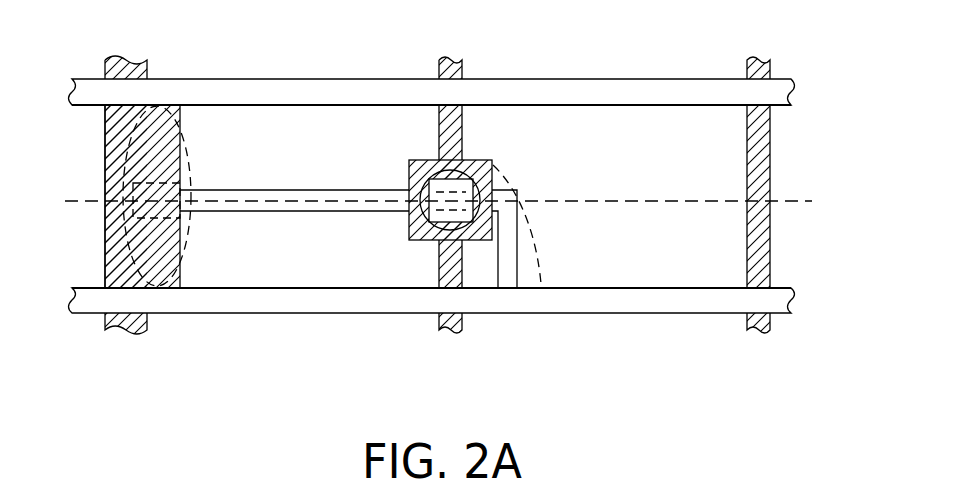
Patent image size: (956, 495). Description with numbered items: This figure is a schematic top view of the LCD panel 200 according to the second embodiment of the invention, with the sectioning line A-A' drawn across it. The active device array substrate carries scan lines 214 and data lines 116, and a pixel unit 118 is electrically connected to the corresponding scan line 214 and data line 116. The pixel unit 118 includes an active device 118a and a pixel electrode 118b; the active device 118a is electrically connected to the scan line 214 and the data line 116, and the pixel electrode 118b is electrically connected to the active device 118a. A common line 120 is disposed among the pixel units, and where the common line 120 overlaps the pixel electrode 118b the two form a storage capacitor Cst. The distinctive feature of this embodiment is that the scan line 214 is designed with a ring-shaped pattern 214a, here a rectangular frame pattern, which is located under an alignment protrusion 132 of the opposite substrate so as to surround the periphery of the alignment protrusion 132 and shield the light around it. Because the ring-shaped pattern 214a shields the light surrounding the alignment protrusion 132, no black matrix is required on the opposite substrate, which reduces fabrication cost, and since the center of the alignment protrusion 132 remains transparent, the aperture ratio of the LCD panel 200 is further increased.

The LCD panel 200 is at (434, 218).
The common line 120 is at (104, 195).
The storage capacitor Cst is at (103, 153).
The data line 116 is at (258, 302).
The scan line 214 is at (447, 266).
The ring-shaped pattern 214a is at (462, 128).
The alignment protrusion 132 is at (460, 172).
The pixel unit 118 is at (557, 292).
The active device 118a is at (497, 200).
The pixel electrode 118b is at (591, 258).